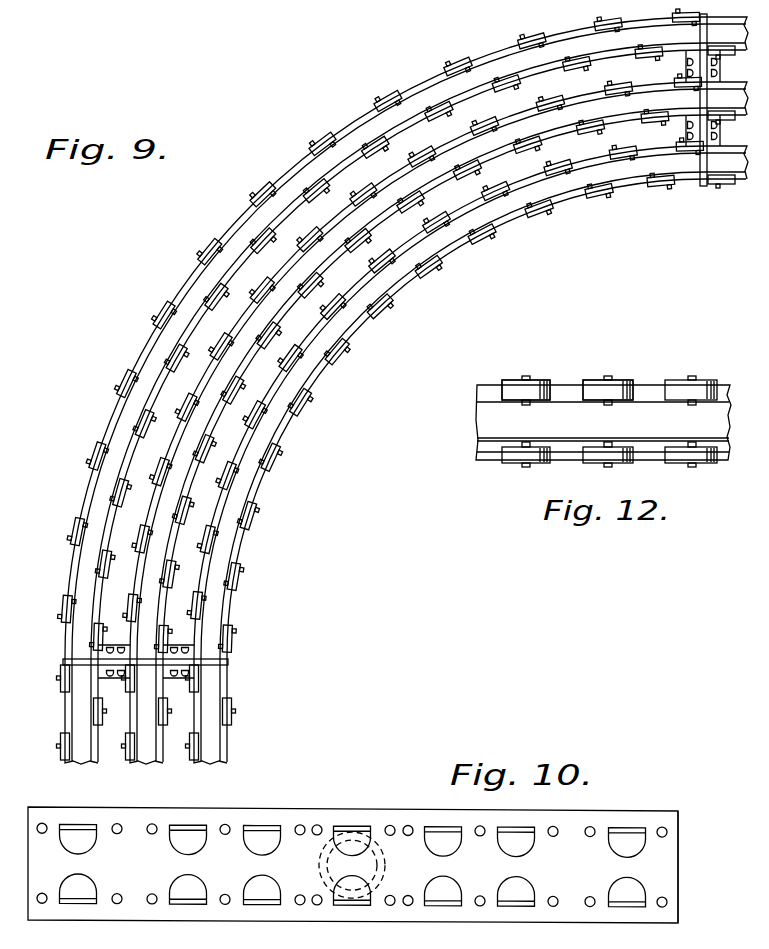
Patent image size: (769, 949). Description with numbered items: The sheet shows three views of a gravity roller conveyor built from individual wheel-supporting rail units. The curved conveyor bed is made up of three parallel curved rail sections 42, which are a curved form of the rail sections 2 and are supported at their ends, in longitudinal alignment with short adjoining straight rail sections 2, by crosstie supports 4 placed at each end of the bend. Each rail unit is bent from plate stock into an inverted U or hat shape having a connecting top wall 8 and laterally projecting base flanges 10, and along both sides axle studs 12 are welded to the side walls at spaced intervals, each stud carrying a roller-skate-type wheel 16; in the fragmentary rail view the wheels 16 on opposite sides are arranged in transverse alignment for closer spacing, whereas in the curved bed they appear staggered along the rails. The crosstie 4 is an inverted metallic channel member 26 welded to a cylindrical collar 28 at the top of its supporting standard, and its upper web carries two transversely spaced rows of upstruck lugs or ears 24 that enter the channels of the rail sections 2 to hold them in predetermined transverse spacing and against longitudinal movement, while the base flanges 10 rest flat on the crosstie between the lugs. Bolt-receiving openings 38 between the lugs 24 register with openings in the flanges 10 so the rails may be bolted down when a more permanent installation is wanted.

In FIG. 9, the rail section 2 is at (88, 712).
In FIG. 9, the crosstie support 4 is at (703, 187).
In FIG. 10, the crosstie support 4 is at (684, 874).
In FIG. 12, the top wall 8 is at (486, 417).
In FIG. 12, the base flange 10 is at (487, 452).
In FIG. 12, the axle stud 12 is at (693, 377).
In FIG. 9, the wheel 16 is at (268, 464).
In FIG. 12, the wheel 16 is at (535, 387).
In FIG. 10, the lug 24 is at (267, 824).
In FIG. 10, the channel member 26 is at (570, 925).
In FIG. 10, the cylindrical collar 28 is at (386, 863).
In FIG. 10, the bolt-receiving opening 38 is at (591, 825).
In FIG. 9, the curved rail section 42 is at (152, 342).